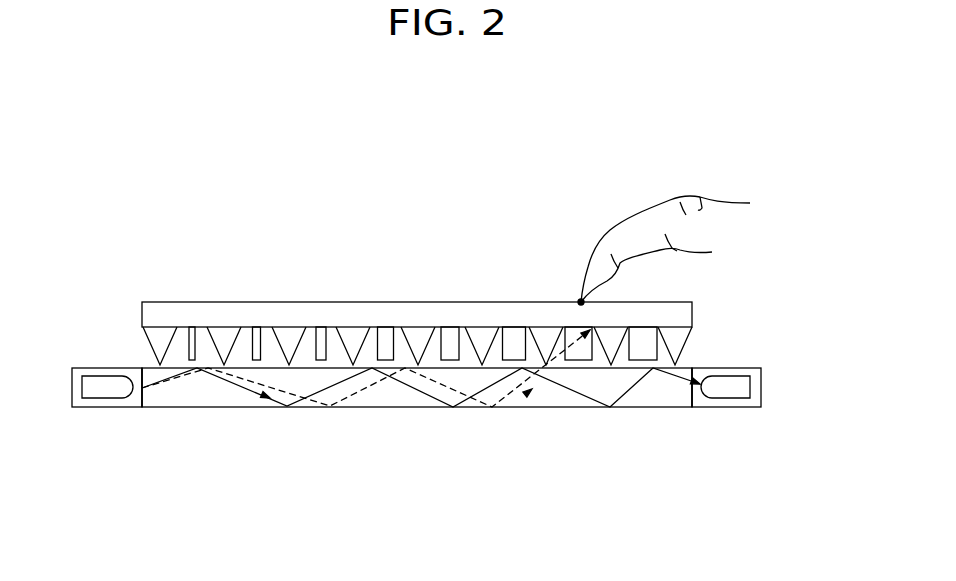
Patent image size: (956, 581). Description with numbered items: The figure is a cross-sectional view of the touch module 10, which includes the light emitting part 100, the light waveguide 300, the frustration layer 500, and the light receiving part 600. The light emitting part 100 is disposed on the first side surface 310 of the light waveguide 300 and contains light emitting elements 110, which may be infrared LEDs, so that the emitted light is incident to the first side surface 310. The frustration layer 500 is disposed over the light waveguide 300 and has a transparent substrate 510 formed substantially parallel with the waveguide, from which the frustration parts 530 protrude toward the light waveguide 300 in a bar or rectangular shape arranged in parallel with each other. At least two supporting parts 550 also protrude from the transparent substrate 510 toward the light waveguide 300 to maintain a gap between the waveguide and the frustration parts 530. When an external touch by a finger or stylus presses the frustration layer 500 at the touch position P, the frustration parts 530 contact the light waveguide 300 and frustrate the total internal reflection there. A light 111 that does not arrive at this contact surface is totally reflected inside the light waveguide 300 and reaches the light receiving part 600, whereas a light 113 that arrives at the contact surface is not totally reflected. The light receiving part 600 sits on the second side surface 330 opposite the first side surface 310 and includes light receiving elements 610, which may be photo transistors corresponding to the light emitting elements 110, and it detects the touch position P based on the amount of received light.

The touch module 10 is at (415, 173).
The light emitting part 100 is at (71, 398).
The light emitting elements 110 is at (100, 375).
The light 111 is at (248, 391).
The light 113 is at (518, 391).
The light waveguide 300 is at (198, 408).
The first side surface 310 is at (141, 398).
The second side surface 330 is at (689, 398).
The frustration layer 500 is at (767, 292).
The transparent substrate 510 is at (693, 307).
The frustration parts 530 is at (654, 349).
The supporting parts 550 is at (684, 340).
The light receiving part 600 is at (762, 398).
The light receiving elements 610 is at (727, 399).
The touch position P is at (579, 300).